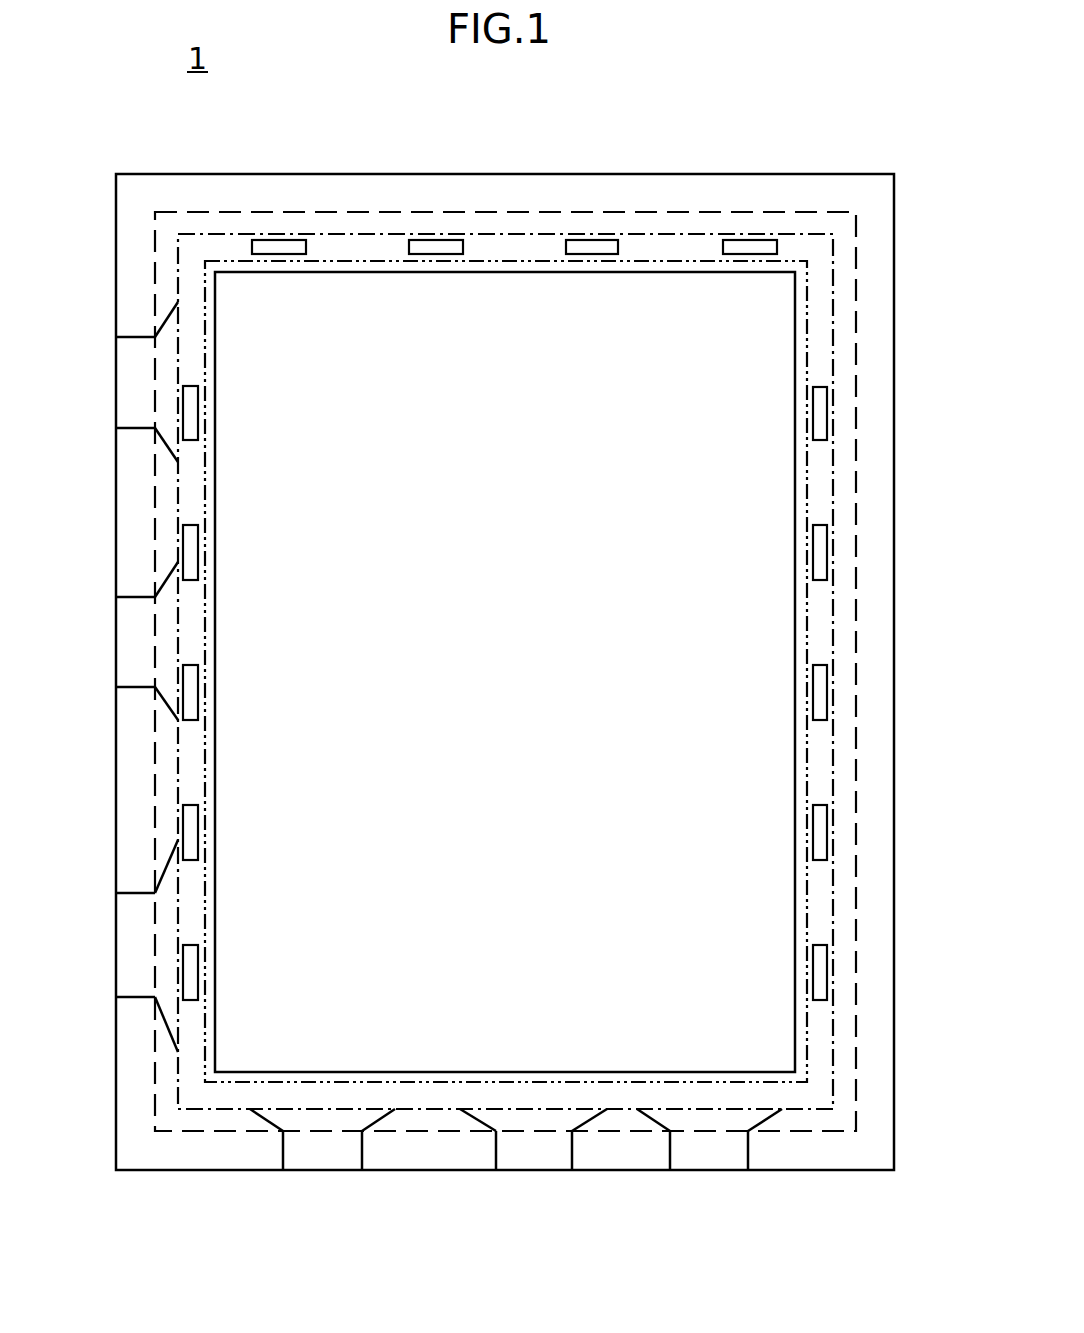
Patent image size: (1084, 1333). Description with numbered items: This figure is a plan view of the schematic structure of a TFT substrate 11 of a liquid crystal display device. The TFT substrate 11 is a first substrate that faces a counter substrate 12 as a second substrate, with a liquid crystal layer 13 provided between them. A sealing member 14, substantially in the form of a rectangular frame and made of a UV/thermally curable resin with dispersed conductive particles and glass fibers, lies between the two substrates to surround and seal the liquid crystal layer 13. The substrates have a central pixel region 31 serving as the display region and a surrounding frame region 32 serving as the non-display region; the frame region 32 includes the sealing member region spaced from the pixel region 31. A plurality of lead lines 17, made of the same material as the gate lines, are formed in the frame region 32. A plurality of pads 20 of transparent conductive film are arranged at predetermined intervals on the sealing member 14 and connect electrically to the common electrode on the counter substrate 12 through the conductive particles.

The TFT substrate 11 is at (648, 182).
The counter substrate 12 is at (701, 220).
The liquid crystal layer 13 is at (780, 367).
The sealing member 14 is at (784, 245).
The lead lines 17 is at (130, 957).
The pads 20 is at (582, 245).
The pixel region 31 is at (258, 757).
The frame region 32 is at (130, 814).